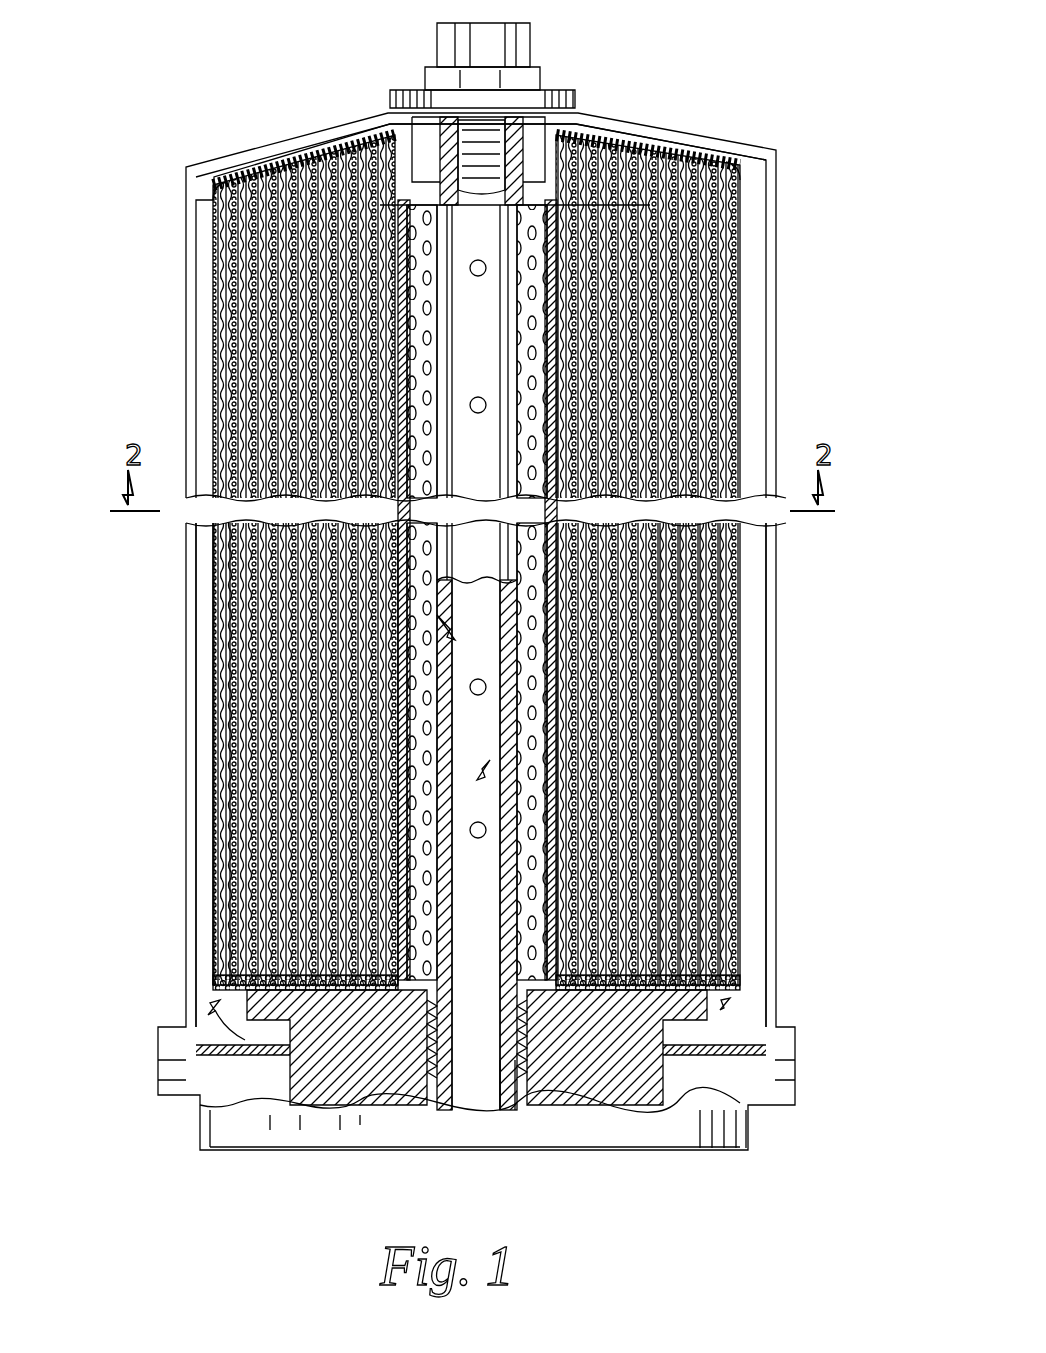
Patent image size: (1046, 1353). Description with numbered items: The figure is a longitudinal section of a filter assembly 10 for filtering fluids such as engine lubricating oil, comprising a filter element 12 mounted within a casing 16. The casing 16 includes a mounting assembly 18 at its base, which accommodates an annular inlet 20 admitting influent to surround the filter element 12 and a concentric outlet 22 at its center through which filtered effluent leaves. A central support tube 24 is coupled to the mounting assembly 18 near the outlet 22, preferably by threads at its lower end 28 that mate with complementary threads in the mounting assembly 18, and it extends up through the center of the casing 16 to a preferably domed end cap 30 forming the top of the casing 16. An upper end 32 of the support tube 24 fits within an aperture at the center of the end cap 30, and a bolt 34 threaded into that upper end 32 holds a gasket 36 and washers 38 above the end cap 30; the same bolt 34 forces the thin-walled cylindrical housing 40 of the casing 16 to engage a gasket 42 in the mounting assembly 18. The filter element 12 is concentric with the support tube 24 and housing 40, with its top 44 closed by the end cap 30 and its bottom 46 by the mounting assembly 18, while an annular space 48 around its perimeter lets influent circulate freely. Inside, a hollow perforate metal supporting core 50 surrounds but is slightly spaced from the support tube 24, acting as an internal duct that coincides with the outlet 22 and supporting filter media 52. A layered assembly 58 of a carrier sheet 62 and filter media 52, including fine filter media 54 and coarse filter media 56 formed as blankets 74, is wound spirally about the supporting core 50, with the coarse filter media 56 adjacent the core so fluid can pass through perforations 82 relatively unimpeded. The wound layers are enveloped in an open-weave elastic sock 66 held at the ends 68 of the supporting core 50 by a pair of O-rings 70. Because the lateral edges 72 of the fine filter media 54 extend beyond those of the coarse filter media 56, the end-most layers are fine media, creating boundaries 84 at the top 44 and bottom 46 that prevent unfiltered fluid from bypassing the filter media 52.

The filter assembly 10 is at (790, 30).
The filter element 12 is at (822, 330).
The casing 16 is at (845, 945).
The mounting assembly 18 is at (620, 1125).
The annular inlet 20 is at (688, 1115).
The concentric outlet 22 is at (520, 1110).
The central support tube 24 is at (477, 843).
The lower end 28 is at (476, 1047).
The end cap 30 is at (770, 150).
The upper end 32 is at (702, 195).
The bolt 34 is at (530, 43).
The gasket 36 is at (540, 75).
The washers 38 is at (600, 104).
The housing 40 is at (770, 752).
The gasket 42 is at (235, 1050).
The top 44 is at (320, 150).
The bottom 46 is at (220, 950).
The annular space 48 is at (766, 272).
The supporting core 50 is at (454, 830).
The filter media 52 is at (160, 878).
The fine filter media 54 is at (702, 862).
The coarse filter media 56 is at (712, 712).
The layered assembly 58 is at (167, 754).
The carrier sheet 62 is at (690, 642).
The elastic sock 66 is at (735, 232).
The ends 68 is at (479, 561).
The O-rings 70 is at (375, 130).
The lateral edges 72 is at (690, 143).
The blanket 74 is at (235, 290).
The perforations 82 is at (468, 435).
The boundaries 84 is at (383, 990).